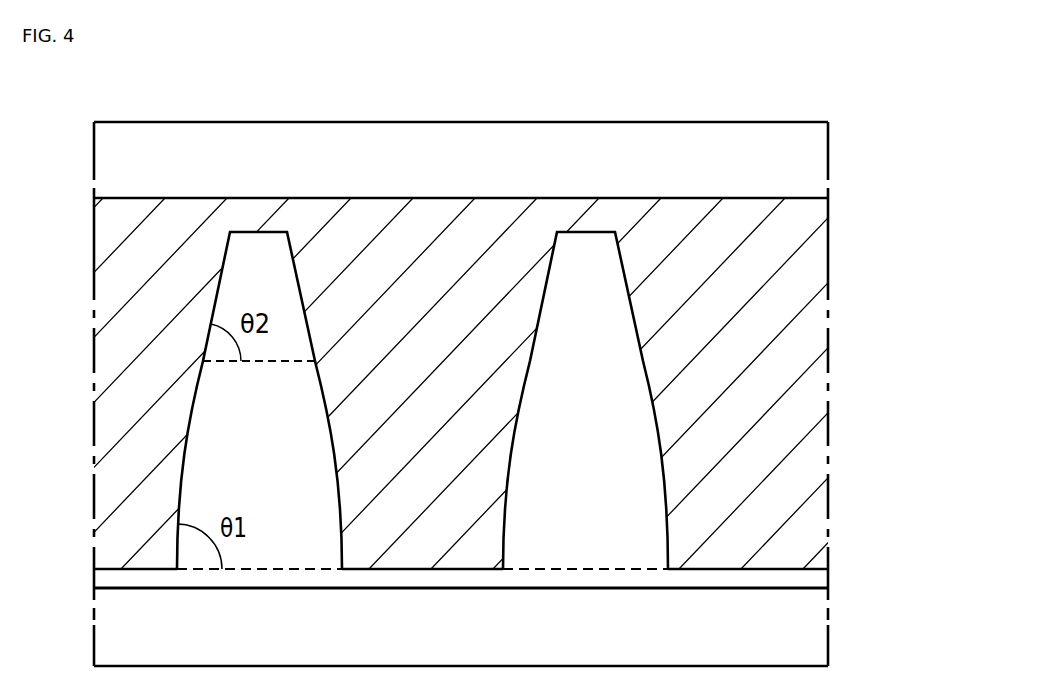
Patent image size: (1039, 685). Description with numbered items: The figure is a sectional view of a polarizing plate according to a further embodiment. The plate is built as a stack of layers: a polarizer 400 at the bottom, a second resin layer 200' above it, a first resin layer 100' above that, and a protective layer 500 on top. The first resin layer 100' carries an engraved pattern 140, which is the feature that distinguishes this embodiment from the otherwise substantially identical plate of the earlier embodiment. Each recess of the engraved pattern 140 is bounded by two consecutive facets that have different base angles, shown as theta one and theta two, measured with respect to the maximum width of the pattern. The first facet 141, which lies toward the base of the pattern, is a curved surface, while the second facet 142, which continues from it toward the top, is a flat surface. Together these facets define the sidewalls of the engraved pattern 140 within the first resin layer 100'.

The protective layer 500 is at (817, 163).
The first resin layer 100' is at (519, 383).
The engraved pattern 140 is at (335, 315).
The second facet 142 is at (203, 345).
The first facet 141 is at (182, 460).
The second resin layer 200' is at (414, 583).
The polarizer 400 is at (817, 622).